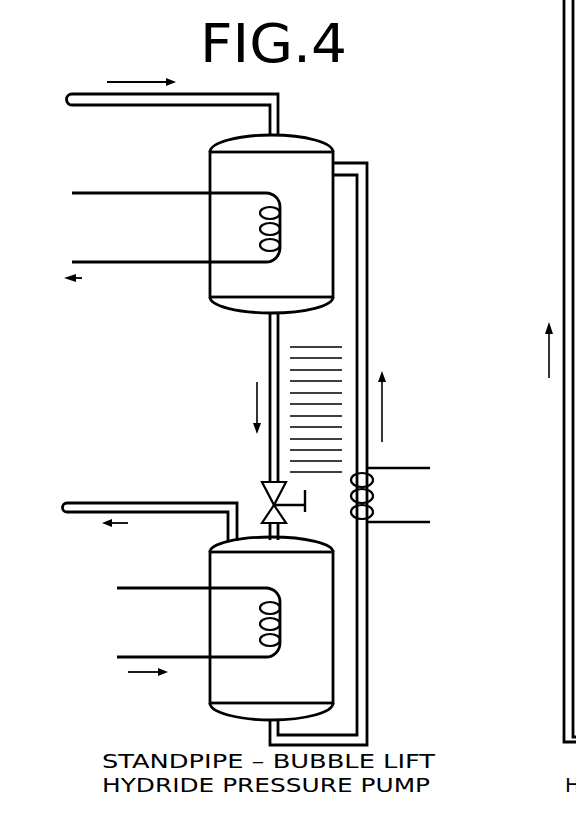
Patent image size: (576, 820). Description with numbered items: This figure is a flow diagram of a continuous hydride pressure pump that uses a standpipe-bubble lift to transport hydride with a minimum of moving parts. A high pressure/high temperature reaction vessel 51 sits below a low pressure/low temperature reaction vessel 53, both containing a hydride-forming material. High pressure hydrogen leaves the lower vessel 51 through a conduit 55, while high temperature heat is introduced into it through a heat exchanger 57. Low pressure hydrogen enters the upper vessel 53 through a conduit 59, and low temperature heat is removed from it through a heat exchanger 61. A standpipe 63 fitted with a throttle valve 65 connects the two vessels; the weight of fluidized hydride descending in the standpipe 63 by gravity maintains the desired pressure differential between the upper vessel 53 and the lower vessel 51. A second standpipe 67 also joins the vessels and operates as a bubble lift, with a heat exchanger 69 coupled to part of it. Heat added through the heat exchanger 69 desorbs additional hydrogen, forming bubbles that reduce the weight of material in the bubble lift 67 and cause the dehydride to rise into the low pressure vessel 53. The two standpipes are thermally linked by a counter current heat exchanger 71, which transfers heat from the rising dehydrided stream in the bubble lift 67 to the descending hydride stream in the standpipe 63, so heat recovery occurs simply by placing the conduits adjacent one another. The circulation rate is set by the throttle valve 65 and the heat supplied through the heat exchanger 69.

The high pressure/high temperature reaction vessel 51 is at (220, 690).
The low pressure/low temperature reaction vessel 53 is at (214, 284).
The conduit 55 is at (183, 512).
The heat exchanger 57 is at (176, 588).
The conduit 59 is at (278, 115).
The heat exchanger 61 is at (165, 193).
The standpipe 63 is at (270, 345).
The throttle valve 65 is at (285, 500).
The second standpipe 67 is at (362, 642).
The heat exchanger 69 is at (415, 522).
The counter current heat exchanger 71 is at (325, 357).